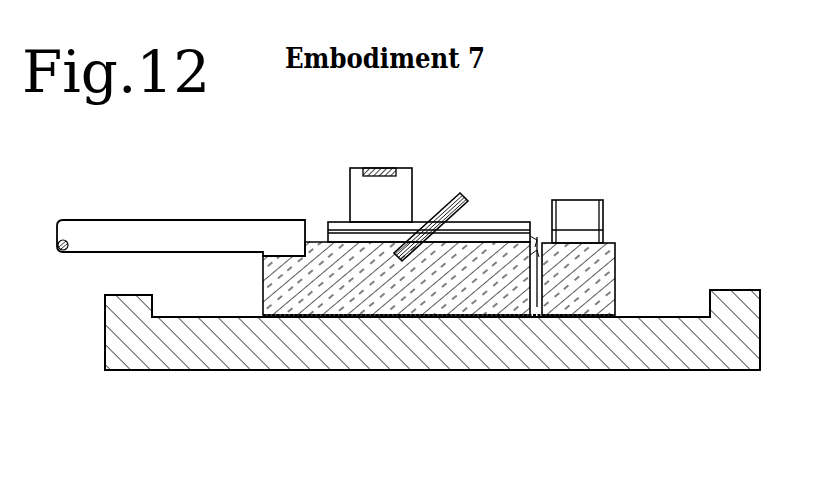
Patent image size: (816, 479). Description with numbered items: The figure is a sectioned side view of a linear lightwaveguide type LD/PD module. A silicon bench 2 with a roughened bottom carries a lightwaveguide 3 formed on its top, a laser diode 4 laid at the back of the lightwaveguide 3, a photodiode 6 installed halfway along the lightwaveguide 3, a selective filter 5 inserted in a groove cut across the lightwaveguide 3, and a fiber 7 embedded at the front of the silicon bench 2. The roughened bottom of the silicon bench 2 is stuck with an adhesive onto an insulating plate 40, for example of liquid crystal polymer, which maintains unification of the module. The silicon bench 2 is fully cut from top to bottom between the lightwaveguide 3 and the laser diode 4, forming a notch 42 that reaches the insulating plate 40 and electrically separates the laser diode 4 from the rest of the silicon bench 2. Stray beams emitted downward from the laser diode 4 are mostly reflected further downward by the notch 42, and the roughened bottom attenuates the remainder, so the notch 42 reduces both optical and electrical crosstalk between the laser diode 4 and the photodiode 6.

The silicon bench 2 is at (605, 268).
The lightwaveguide 3 is at (493, 229).
The laser diode 4 is at (592, 206).
The selective filter 5 is at (437, 213).
The photodiode 6 is at (398, 193).
The fiber 7 is at (227, 237).
The insulating plate 40 is at (207, 343).
The notch 42 is at (537, 307).